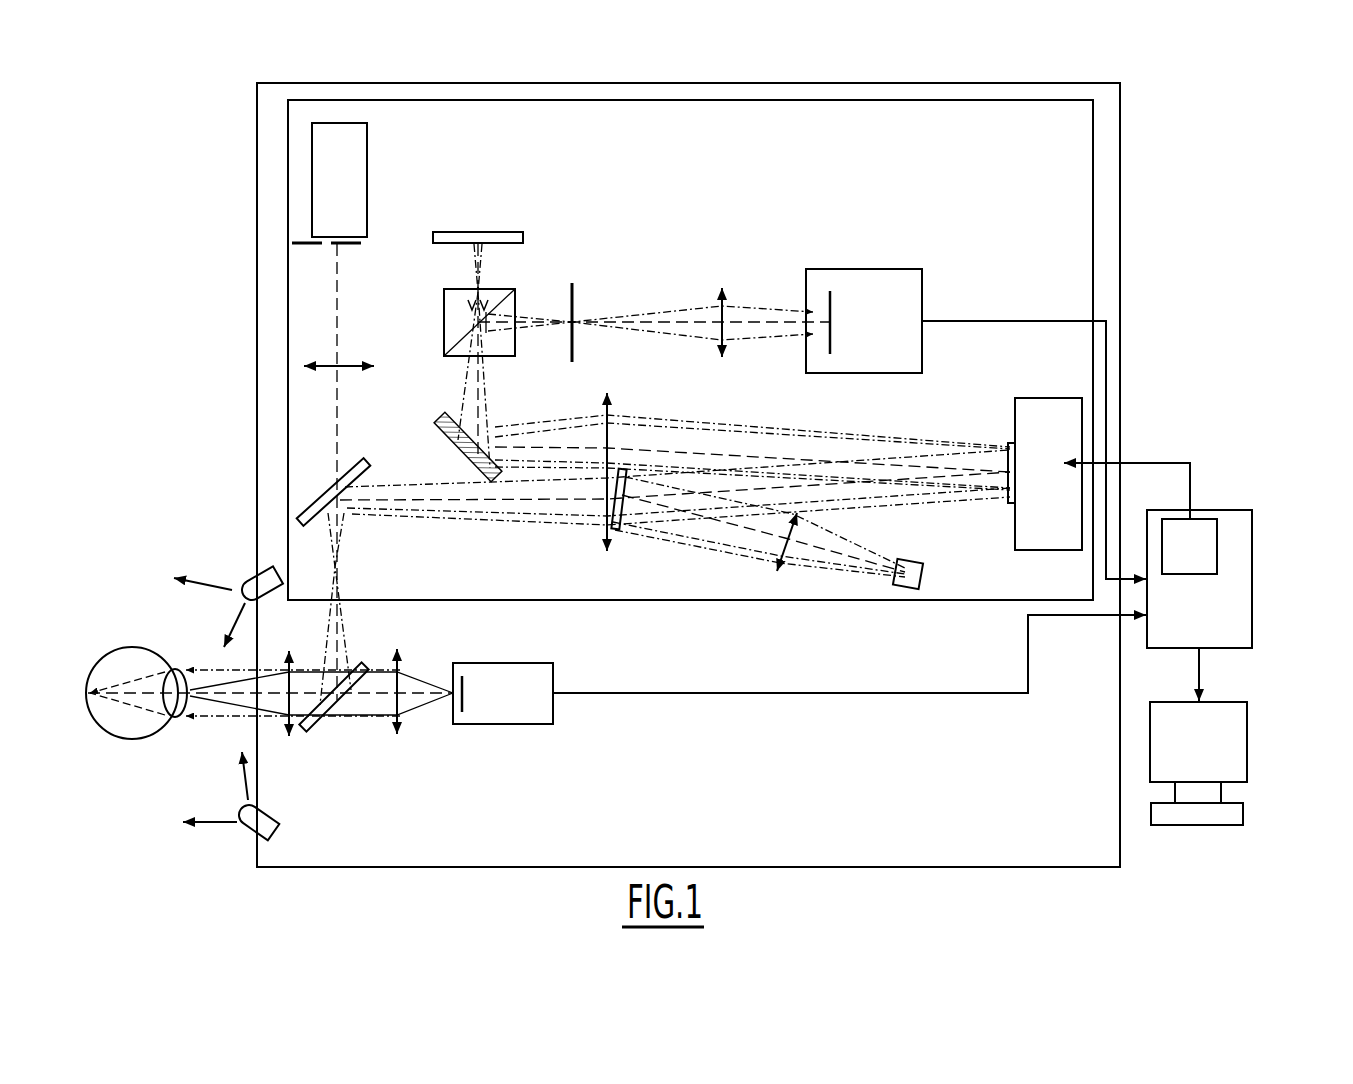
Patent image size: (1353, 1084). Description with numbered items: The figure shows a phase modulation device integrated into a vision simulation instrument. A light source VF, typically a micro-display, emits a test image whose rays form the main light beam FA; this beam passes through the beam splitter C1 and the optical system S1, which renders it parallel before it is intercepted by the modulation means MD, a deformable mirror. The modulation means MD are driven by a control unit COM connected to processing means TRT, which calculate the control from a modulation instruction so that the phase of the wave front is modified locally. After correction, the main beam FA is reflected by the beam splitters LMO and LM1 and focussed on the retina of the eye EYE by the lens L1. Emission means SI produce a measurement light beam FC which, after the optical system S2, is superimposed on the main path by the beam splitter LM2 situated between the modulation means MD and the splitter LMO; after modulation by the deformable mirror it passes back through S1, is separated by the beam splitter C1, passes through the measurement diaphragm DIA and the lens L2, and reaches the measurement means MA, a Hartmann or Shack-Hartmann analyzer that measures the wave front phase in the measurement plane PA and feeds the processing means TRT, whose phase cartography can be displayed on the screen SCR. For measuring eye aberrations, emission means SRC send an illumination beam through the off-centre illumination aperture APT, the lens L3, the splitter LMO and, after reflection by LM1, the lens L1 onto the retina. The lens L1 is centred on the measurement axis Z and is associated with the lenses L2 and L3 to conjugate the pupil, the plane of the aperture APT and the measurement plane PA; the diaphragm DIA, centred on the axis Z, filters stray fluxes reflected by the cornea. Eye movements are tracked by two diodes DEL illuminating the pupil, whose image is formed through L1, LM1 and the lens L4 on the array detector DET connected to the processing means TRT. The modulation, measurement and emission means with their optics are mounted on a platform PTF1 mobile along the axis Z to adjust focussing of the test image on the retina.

The platform PTF1 is at (1076, 168).
The emission means of the illumination beam SRC is at (354, 152).
The illumination aperture APT is at (322, 249).
The measurement axis / optical axis Z is at (340, 310).
The lens L3 is at (323, 362).
The beam splitter LMO is at (350, 468).
The diodes DEL is at (253, 587).
The eye EYE is at (115, 725).
The main light beam FA is at (212, 715).
The measurement light beam (secondary beam) FC is at (750, 305).
The lens L1 is at (290, 662).
The beam splitter LM1 is at (317, 727).
The lens L4 is at (398, 717).
The array detector DET is at (470, 722).
The light source VF is at (496, 241).
The beam splitter C1 is at (503, 348).
The measurement diaphragm DIA is at (576, 291).
The lens L2 is at (720, 290).
The measurement plane PA is at (835, 290).
The optical measurement means MA is at (912, 342).
The modulation means (deformable mirror) MD is at (1047, 405).
The optical system S1 is at (610, 408).
The beam splitter LM2 is at (623, 537).
The optical system S2 is at (793, 547).
The emission means of the measurement light beam SI is at (928, 574).
The control unit COM is at (1177, 528).
The processing means TRT is at (1238, 522).
The screen SCR is at (1232, 745).